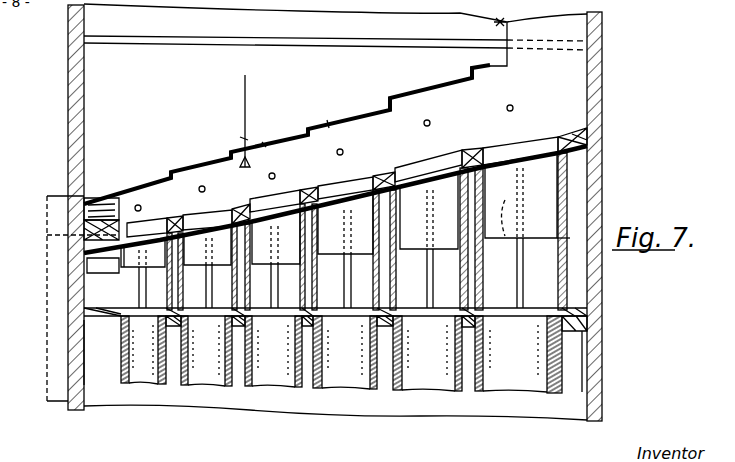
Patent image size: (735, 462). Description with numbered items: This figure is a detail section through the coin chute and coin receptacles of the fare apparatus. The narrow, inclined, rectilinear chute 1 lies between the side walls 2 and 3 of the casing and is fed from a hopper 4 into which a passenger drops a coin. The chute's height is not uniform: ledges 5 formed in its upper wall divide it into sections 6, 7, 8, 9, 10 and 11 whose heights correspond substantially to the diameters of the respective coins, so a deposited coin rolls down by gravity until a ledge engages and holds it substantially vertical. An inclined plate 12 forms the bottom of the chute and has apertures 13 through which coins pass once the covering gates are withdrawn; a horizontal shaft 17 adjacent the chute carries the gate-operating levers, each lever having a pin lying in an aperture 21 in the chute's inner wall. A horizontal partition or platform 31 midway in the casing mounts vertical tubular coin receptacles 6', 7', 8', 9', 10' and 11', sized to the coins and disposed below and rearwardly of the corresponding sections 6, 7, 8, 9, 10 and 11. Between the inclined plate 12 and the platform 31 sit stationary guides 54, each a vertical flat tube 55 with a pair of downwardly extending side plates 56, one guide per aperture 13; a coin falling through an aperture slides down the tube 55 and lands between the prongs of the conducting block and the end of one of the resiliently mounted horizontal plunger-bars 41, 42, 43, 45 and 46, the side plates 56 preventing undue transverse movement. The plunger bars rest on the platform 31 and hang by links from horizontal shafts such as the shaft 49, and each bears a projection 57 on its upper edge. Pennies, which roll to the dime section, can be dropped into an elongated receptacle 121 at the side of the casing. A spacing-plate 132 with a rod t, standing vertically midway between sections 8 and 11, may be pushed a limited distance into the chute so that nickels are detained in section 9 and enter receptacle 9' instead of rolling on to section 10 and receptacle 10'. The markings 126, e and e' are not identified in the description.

The chute 1 is at (570, 90).
The side wall 2 is at (603, 37).
The side wall 3 is at (70, 99).
The hopper 4 is at (494, 23).
The ledges 5 is at (167, 175).
The section 6 is at (509, 85).
The section 7 is at (431, 101).
The section 8 is at (351, 134).
The section 9 is at (284, 163).
The section 10 is at (217, 175).
The section 11 is at (161, 197).
The inclined plate 12 is at (289, 277).
The apertures 13 is at (147, 228).
The horizontal shaft 17 is at (128, 45).
The aperture 21 is at (199, 187).
The horizontal partition or plate 31 is at (95, 310).
The plunger-bar 41 is at (522, 281).
The plunger-bar 42 is at (435, 270).
The plunger-bar 43 is at (352, 280).
The plunger-bar 45 is at (212, 276).
The plunger-bar 46 is at (139, 283).
The shaft 49 is at (272, 283).
The stationary guides 54 is at (572, 237).
The vertical flat tube 55 is at (567, 191).
The side plates 56 is at (567, 291).
The projection 57 is at (517, 237).
The elongated receptacle 121 is at (67, 351).
The end block 126 is at (106, 197).
The spacing-plate 132 is at (240, 137).
The coin receptacle 6' is at (518, 381).
The coin receptacle 7' is at (427, 381).
The coin receptacle 8' is at (345, 381).
The coin receptacle 9' is at (273, 381).
The coin receptacle 10' is at (206, 381).
The coin receptacle 11' is at (145, 381).
The point e is at (267, 135).
The point e' is at (326, 115).
The rod t is at (252, 88).